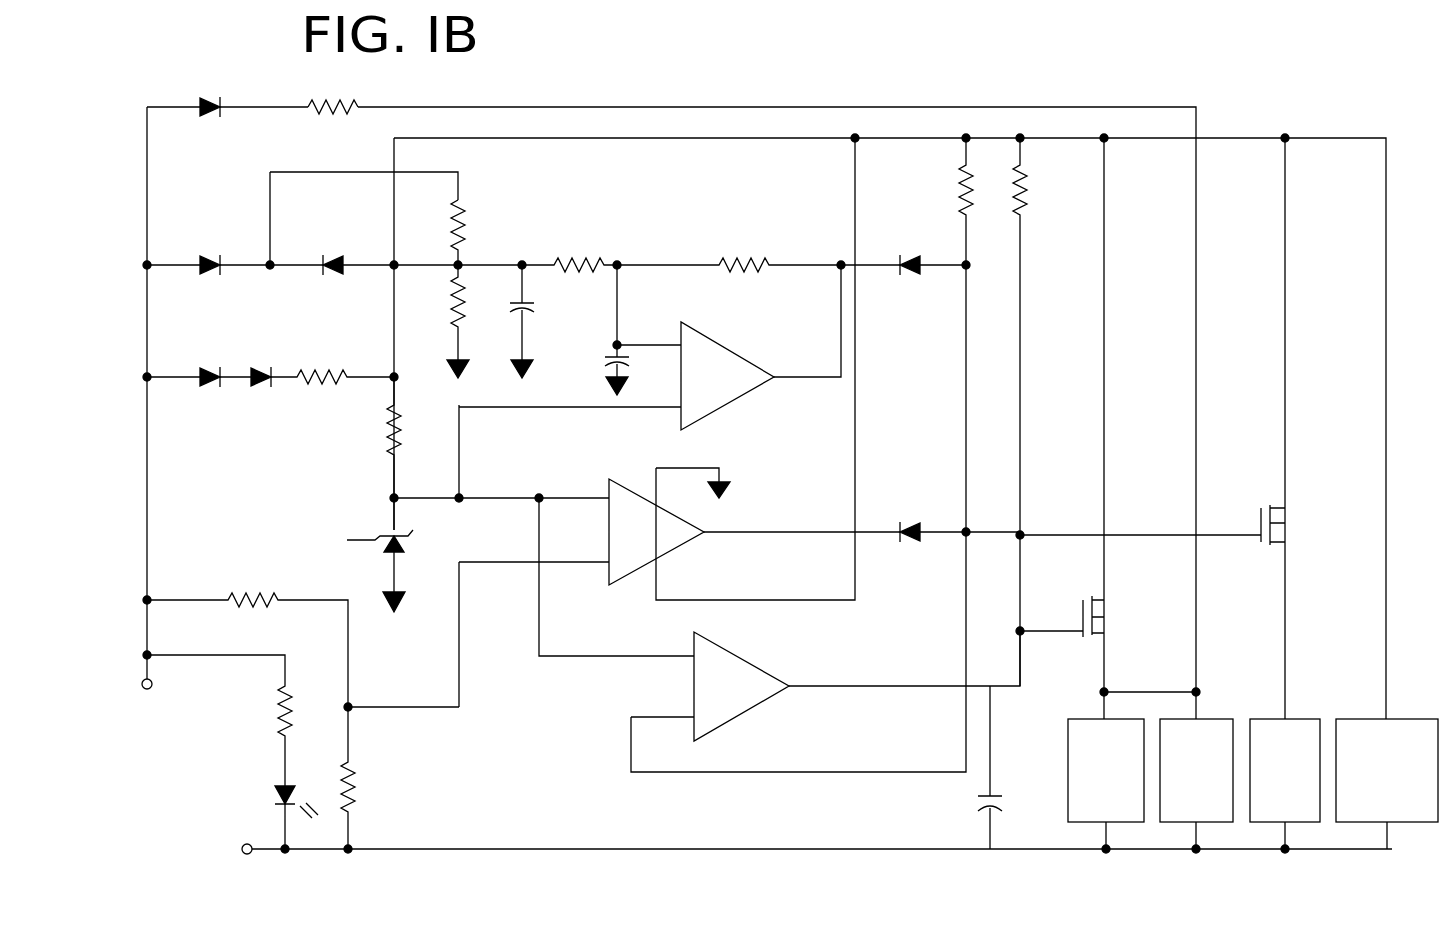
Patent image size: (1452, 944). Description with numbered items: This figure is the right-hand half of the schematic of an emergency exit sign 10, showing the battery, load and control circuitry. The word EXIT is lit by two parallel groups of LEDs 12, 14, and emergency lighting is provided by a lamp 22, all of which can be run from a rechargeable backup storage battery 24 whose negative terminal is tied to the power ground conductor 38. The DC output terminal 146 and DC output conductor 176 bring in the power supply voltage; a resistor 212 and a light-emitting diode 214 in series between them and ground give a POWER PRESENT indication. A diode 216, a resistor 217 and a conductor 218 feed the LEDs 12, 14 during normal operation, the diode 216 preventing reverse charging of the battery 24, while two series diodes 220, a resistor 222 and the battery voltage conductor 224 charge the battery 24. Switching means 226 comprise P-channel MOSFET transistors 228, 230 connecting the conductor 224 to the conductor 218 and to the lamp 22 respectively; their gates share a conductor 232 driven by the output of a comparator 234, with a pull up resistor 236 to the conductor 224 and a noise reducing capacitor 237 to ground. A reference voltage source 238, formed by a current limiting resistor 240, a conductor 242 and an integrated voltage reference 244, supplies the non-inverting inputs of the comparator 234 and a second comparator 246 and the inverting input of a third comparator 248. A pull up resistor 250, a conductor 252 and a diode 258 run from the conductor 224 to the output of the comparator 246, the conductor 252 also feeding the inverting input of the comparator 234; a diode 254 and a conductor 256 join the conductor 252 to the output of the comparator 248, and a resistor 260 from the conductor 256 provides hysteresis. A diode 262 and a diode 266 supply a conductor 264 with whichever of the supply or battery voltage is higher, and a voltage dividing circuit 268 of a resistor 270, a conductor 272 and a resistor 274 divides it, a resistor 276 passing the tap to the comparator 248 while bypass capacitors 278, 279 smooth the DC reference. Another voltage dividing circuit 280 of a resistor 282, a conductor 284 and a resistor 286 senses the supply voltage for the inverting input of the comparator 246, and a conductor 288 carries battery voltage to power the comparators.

The exit sign 10 is at (1262, 113).
The LEDs 12 is at (1210, 725).
The LEDs 14 is at (1068, 782).
The lamp 22 is at (1290, 720).
The backup storage battery 24 is at (1360, 718).
The power ground conductor 38 is at (243, 848).
The DC output terminal 146 is at (152, 684).
The DC output conductor 176 is at (147, 465).
The resistor 212 is at (285, 715).
The light-emitting diode 214 is at (280, 790).
The diode 216 is at (203, 100).
The resistor 217 is at (318, 122).
The conductor 218 is at (555, 105).
The series-connected diodes 220 is at (210, 388).
The resistor 222 is at (320, 388).
The battery voltage conductor 224 is at (697, 135).
The switching means 226 is at (1222, 569).
The switching transistor 228 is at (1070, 590).
The switching transistor 230 is at (1252, 492).
The conductor 232 is at (1020, 495).
The comparator 234 is at (760, 714).
The pull up resistor 236 is at (1030, 196).
The noise reducing capacitor 237 is at (965, 810).
The reference voltage source 238 is at (346, 523).
The current limiting resistor 240 is at (400, 432).
The conductor 242 is at (400, 498).
The integrated voltage reference 244 is at (410, 540).
The second comparator 246 is at (680, 548).
The third comparator 248 is at (740, 400).
The pull up resistor 250 is at (962, 175).
The conductor 252 is at (970, 535).
The diode 254 is at (905, 275).
The conductor 256 is at (841, 262).
The diode 258 is at (910, 545).
The resistor 260 is at (748, 268).
The diode 262 is at (210, 275).
The conductor 264 is at (270, 268).
The diode 266 is at (333, 275).
The voltage dividing circuit 268 is at (482, 194).
The resistor 270 is at (467, 223).
The conductor 272 is at (458, 265).
The resistor 274 is at (470, 320).
The resistor 276 is at (578, 268).
The bypass capacitor 278 is at (540, 310).
The bypass capacitor 279 is at (610, 368).
The voltage dividing circuit 280 is at (312, 680).
The resistor 282 is at (245, 605).
The conductor 284 is at (348, 707).
The resistor 286 is at (352, 785).
The conductor 288 is at (770, 600).